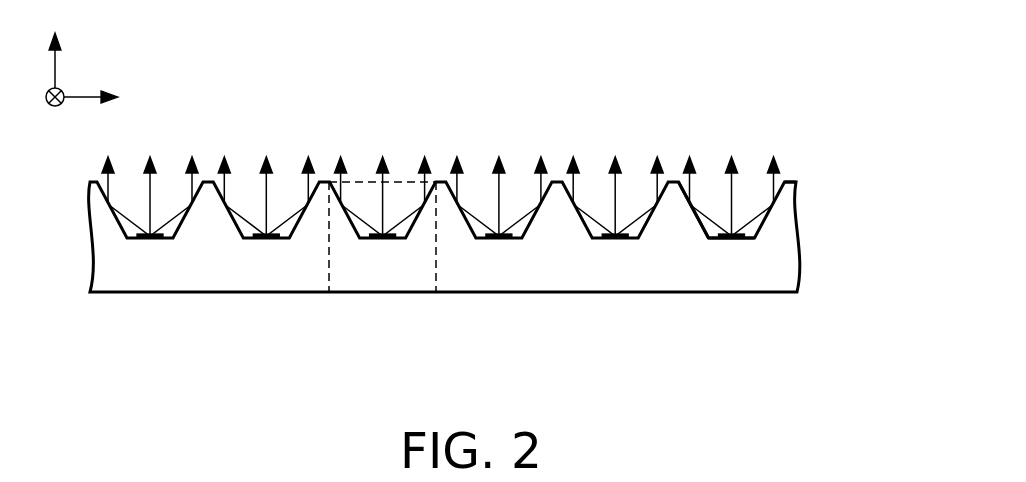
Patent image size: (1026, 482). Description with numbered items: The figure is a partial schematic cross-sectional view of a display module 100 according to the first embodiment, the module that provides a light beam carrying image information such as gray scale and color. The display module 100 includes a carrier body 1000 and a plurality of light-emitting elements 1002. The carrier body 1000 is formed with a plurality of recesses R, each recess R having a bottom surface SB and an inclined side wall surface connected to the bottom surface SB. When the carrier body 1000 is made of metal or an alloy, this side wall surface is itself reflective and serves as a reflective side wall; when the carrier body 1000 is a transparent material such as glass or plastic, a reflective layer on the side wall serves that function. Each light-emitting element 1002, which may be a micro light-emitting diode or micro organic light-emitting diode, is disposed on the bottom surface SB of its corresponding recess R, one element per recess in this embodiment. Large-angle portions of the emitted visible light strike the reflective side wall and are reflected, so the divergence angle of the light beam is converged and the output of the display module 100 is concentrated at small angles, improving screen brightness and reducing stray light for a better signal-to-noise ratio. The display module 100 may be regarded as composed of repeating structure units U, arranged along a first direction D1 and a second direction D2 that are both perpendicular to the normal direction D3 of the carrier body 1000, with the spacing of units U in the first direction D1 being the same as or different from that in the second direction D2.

The display module 100 is at (492, 251).
The carrier body 1000 is at (792, 254).
The light-emitting elements 1002 is at (737, 241).
The structure units U is at (436, 266).
The bottom surface SB is at (715, 250).
The recesses R is at (712, 360).
The first direction D1 is at (106, 97).
The second direction D2 is at (57, 118).
The normal direction D3 is at (57, 44).